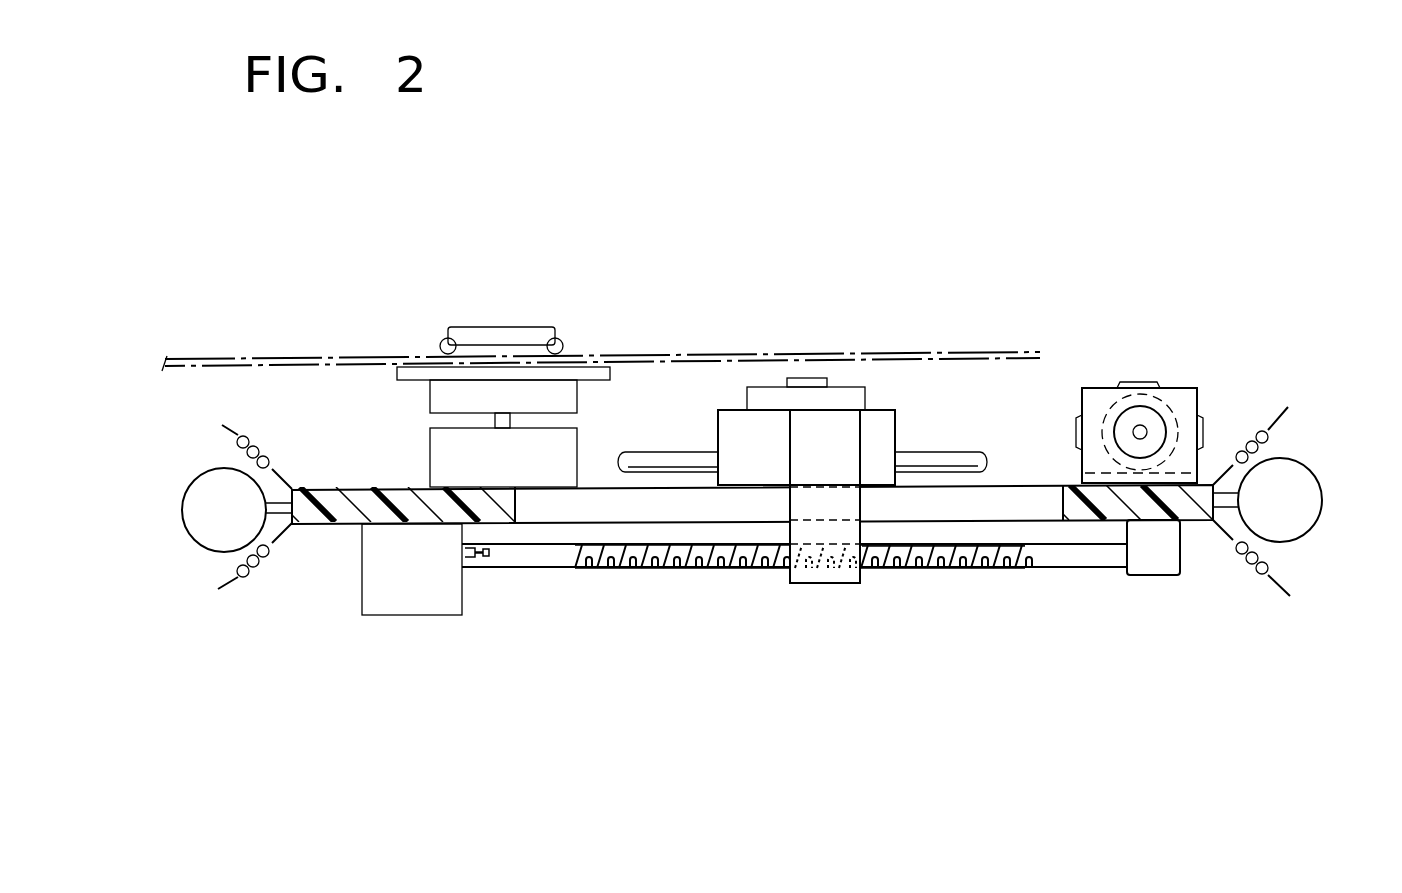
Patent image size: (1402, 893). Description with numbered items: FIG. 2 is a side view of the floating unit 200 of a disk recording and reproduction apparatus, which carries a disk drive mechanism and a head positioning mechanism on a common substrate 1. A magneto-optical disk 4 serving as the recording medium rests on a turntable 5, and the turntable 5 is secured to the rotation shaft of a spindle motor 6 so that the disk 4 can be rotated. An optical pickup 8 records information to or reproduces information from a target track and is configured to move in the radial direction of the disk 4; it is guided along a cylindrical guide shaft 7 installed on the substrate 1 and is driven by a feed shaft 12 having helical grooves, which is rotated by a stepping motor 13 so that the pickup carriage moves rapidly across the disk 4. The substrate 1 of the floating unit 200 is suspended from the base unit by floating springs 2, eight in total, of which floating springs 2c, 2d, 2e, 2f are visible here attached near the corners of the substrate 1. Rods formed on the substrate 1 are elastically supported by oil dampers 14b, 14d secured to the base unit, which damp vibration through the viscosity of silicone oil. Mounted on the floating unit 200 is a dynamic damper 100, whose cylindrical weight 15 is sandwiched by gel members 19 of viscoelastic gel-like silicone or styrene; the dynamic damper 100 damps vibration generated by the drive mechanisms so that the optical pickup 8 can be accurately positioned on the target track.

The substrate 1 is at (768, 507).
The floating springs 2 is at (756, 504).
The floating spring 2c is at (1252, 418).
The floating spring 2d is at (1238, 562).
The floating spring 2e is at (266, 442).
The floating spring 2f is at (262, 575).
The magneto-optical disk 4 is at (710, 355).
The turntable 5 is at (590, 370).
The spindle motor 6 is at (570, 452).
The guide shaft 7 is at (945, 455).
The optical pickup 8 is at (822, 383).
The feed shaft 12 is at (892, 572).
The stepping motor 13 is at (420, 600).
The oil damper 14b is at (208, 527).
The oil damper 14d is at (1295, 527).
The weight 15 is at (1162, 410).
The gel member 19 is at (1100, 415).
The dynamic damper 100 is at (1135, 362).
The floating unit 200 is at (628, 570).